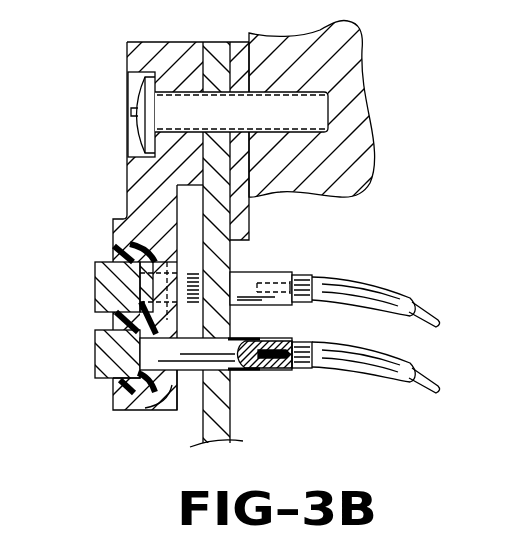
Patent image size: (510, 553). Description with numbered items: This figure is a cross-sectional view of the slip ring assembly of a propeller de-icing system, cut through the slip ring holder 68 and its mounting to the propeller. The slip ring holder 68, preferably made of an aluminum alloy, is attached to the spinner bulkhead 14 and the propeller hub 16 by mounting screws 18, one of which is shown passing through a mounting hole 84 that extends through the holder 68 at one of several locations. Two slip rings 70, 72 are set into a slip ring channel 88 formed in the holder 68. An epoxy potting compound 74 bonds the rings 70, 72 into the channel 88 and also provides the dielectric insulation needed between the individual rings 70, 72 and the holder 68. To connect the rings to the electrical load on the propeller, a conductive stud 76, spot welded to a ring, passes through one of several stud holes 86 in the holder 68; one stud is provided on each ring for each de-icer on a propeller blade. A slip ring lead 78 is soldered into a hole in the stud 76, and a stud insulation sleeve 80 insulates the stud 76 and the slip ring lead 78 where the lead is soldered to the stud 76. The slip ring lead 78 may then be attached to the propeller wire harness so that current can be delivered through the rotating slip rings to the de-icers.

The spinner bulkhead 14 is at (228, 423).
The propeller hub 16 is at (357, 72).
The mounting screws 18 is at (135, 133).
The slip ring holder 68 is at (127, 177).
The slip ring 70 is at (97, 290).
The slip ring 72 is at (105, 355).
The epoxy potting compound 74 is at (113, 320).
The conductive stud 76 is at (300, 373).
The slip ring lead 78 is at (385, 365).
The stud insulation sleeve 80 is at (280, 372).
The mounting holes 84 is at (188, 92).
The stud holes 86 is at (168, 383).
The slip ring channel 88 is at (117, 247).